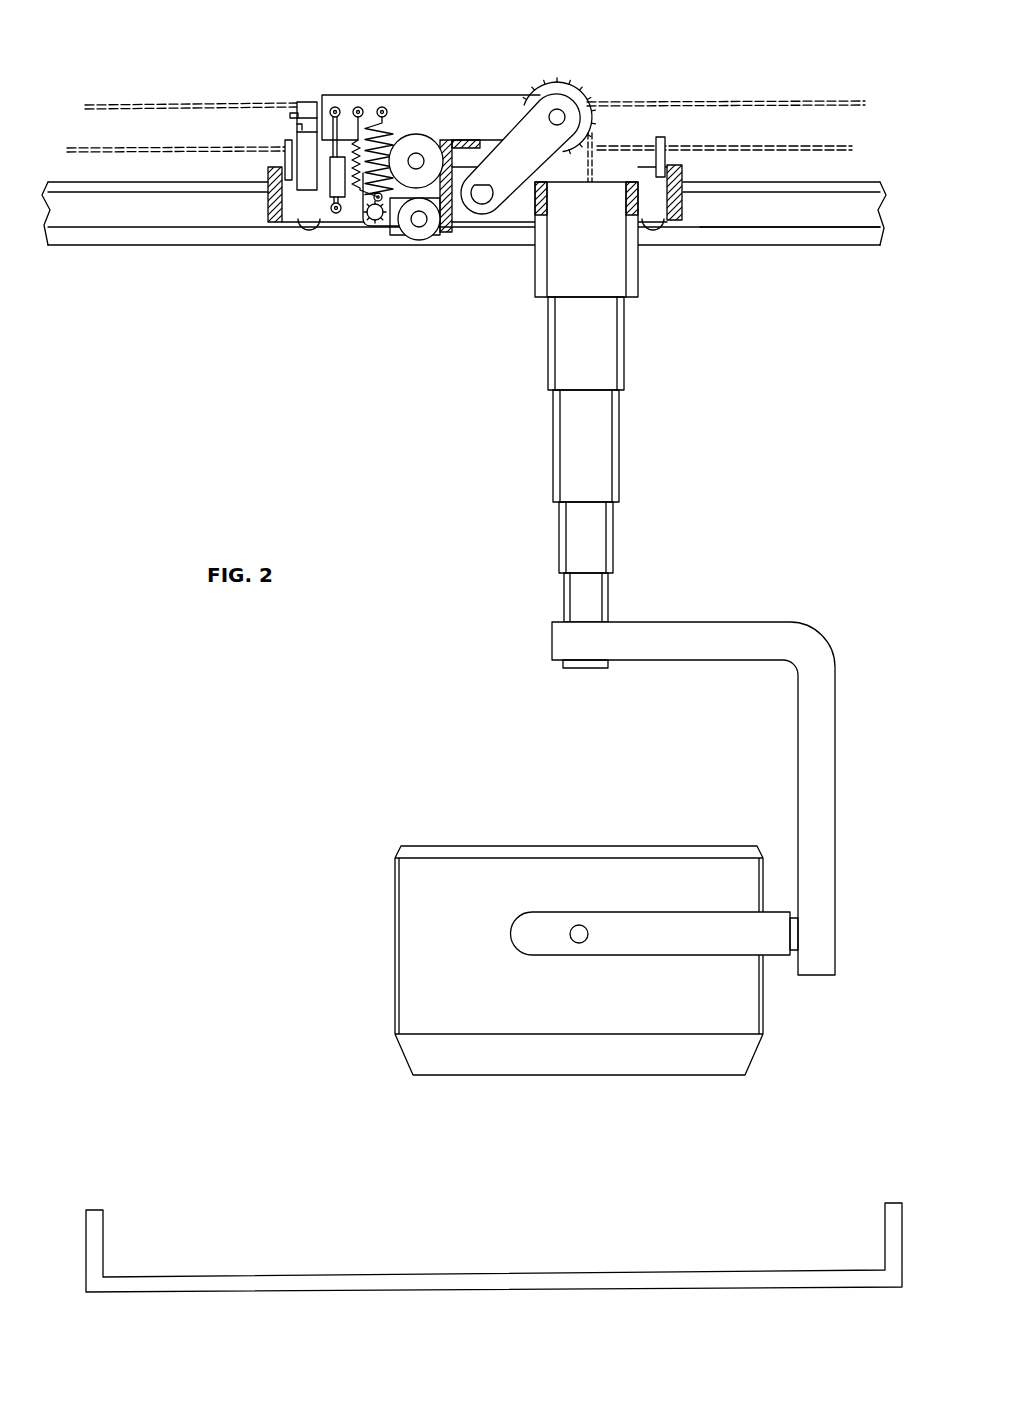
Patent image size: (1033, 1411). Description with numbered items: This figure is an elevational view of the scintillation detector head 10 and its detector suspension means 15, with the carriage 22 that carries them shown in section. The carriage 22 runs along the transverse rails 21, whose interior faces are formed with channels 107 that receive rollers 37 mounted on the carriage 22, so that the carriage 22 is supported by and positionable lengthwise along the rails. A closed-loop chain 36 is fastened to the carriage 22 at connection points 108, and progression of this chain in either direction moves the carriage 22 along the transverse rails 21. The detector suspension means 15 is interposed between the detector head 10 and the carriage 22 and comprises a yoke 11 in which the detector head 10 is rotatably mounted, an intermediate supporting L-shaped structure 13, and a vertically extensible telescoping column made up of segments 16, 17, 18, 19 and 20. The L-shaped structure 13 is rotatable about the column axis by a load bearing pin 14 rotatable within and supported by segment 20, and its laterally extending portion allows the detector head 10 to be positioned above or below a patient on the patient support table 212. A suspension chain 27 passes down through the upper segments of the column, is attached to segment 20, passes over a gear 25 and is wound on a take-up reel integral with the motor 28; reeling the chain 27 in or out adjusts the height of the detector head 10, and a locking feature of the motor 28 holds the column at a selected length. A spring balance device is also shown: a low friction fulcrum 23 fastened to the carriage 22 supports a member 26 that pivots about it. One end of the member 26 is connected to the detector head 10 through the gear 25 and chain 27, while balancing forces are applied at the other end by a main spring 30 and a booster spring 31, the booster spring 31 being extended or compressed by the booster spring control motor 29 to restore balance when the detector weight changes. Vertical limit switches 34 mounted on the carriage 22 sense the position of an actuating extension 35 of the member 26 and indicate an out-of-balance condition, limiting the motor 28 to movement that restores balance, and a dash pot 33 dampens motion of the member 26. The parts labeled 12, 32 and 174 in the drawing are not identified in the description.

The scintillation detector head 10 is at (630, 833).
The yoke 11 is at (695, 923).
The pivot pin 12 is at (577, 925).
The L-shaped structure 13 is at (822, 752).
The load bearing pin 14 is at (590, 668).
The detector suspension means 15 is at (656, 402).
The column segment 16 is at (586, 239).
The column segment 17 is at (586, 343).
The column segment 18 is at (586, 446).
The column segment 19 is at (586, 537).
The column segment 20 is at (586, 597).
The transverse rails 21 is at (845, 182).
The carriage 22 is at (252, 209).
The low friction fulcrum 23 is at (482, 205).
The gear 25 is at (578, 88).
The member 26 is at (520, 154).
The suspension chain 27 is at (600, 130).
The motor 28 is at (430, 167).
The booster spring control motor 29 is at (428, 230).
The main spring 30 is at (370, 127).
The booster spring 31 is at (362, 138).
The gear 32 is at (370, 227).
The dash pot 33 is at (328, 188).
The vertical limit switches 34 is at (295, 130).
The actuating extension 35 is at (310, 100).
The chain 36 is at (185, 100).
The rollers 37 is at (307, 233).
The channels 107 is at (833, 225).
The connection points 108 is at (285, 146).
The pivot pin 174 is at (562, 112).
The patient support table 212 is at (580, 1270).